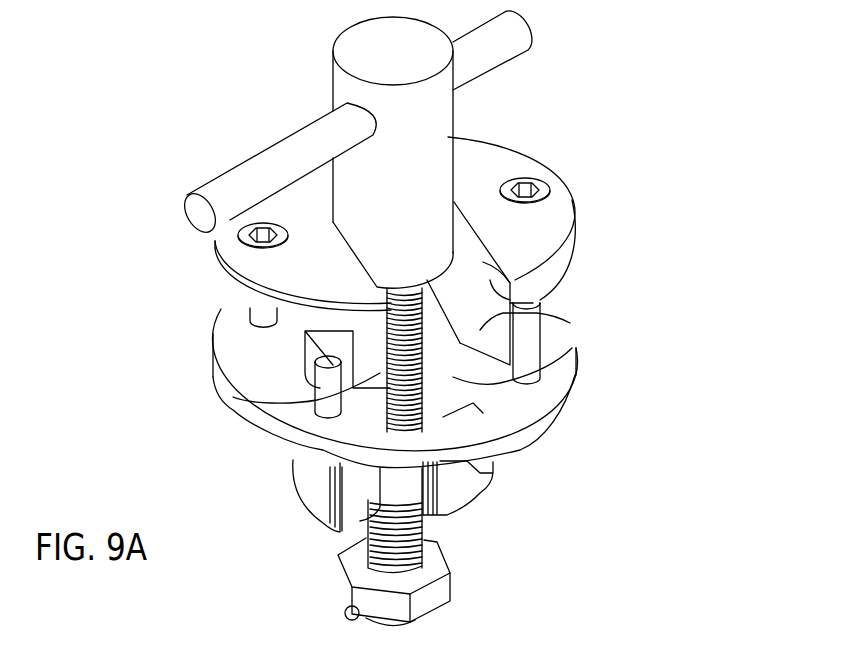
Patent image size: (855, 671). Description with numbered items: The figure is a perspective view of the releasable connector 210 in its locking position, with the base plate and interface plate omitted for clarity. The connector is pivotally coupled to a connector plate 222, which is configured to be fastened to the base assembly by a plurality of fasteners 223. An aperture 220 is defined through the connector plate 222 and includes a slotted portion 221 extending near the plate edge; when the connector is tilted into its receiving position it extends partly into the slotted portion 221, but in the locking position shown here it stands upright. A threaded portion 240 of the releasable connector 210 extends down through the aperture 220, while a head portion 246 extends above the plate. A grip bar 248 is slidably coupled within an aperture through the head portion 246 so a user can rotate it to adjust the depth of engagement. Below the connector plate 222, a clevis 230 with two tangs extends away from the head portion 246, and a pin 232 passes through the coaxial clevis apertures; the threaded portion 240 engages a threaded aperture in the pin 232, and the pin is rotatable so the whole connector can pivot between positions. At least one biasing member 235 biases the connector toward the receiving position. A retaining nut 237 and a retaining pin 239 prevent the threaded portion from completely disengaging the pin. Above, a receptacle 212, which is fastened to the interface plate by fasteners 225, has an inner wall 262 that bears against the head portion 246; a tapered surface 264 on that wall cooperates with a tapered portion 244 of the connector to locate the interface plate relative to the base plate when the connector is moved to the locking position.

The releasable connector 210 is at (660, 42).
The receptacle 212 is at (557, 213).
The aperture 220 is at (433, 385).
The slotted portion 221 is at (455, 415).
The connector plate 222 is at (552, 408).
The fasteners 223 is at (318, 405).
The fasteners 225 is at (242, 310).
The clevis 230 is at (365, 520).
The pin 232 is at (305, 477).
The biasing member 235 is at (327, 520).
The retaining nut 237 is at (340, 580).
The retaining pin 239 is at (346, 612).
The threaded portion 240 is at (297, 447).
The tapered portion 244 is at (385, 290).
The head portion 246 is at (370, 35).
The grip bar 248 is at (265, 148).
The inner wall 262 is at (533, 303).
The tapered surface 264 is at (570, 323).